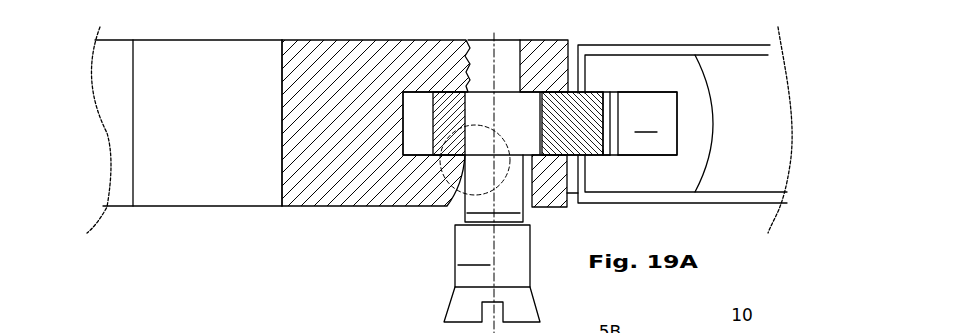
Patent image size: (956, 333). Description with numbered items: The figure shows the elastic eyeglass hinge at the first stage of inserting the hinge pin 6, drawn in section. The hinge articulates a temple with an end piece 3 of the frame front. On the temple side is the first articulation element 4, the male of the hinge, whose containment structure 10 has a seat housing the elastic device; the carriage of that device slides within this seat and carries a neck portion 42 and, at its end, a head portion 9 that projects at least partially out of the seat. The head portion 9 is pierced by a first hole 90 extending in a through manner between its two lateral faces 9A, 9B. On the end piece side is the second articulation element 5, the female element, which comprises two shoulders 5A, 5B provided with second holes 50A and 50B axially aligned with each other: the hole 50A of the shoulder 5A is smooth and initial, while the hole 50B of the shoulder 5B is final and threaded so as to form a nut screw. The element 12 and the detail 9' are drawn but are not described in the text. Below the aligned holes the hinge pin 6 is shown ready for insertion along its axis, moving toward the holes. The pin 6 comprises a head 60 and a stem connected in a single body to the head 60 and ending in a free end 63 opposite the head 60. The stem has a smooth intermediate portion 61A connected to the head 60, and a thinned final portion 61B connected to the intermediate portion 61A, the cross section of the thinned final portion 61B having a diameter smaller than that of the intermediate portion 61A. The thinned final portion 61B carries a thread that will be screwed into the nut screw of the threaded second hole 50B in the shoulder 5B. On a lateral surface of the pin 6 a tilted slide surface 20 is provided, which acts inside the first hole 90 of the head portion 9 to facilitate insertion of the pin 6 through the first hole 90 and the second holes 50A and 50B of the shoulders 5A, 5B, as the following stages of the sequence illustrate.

The end piece 3 is at (197, 185).
The second articulation element 5 is at (246, 210).
The block 12 is at (330, 188).
The slot 9' is at (334, 123).
The head portion 9 is at (577, 108).
The lateral face 9A is at (603, 156).
The lateral face 9B is at (628, 93).
The neck portion 42 is at (647, 123).
The shoulder 5A is at (549, 197).
The shoulder 5B is at (550, 60).
The containment structure 10 is at (742, 176).
The first hole 90 is at (523, 135).
The thinned final portion 61B is at (494, 188).
The intermediate portion 61A is at (492, 256).
The head 60 is at (524, 304).
The tilted slide surface 20 is at (501, 157).
The free end 63 is at (498, 160).
The final threaded second hole 50B is at (483, 67).
The smooth initial second hole 50A is at (452, 204).
The hinge pin 6 is at (421, 283).
The first articulation element 4 is at (790, 224).